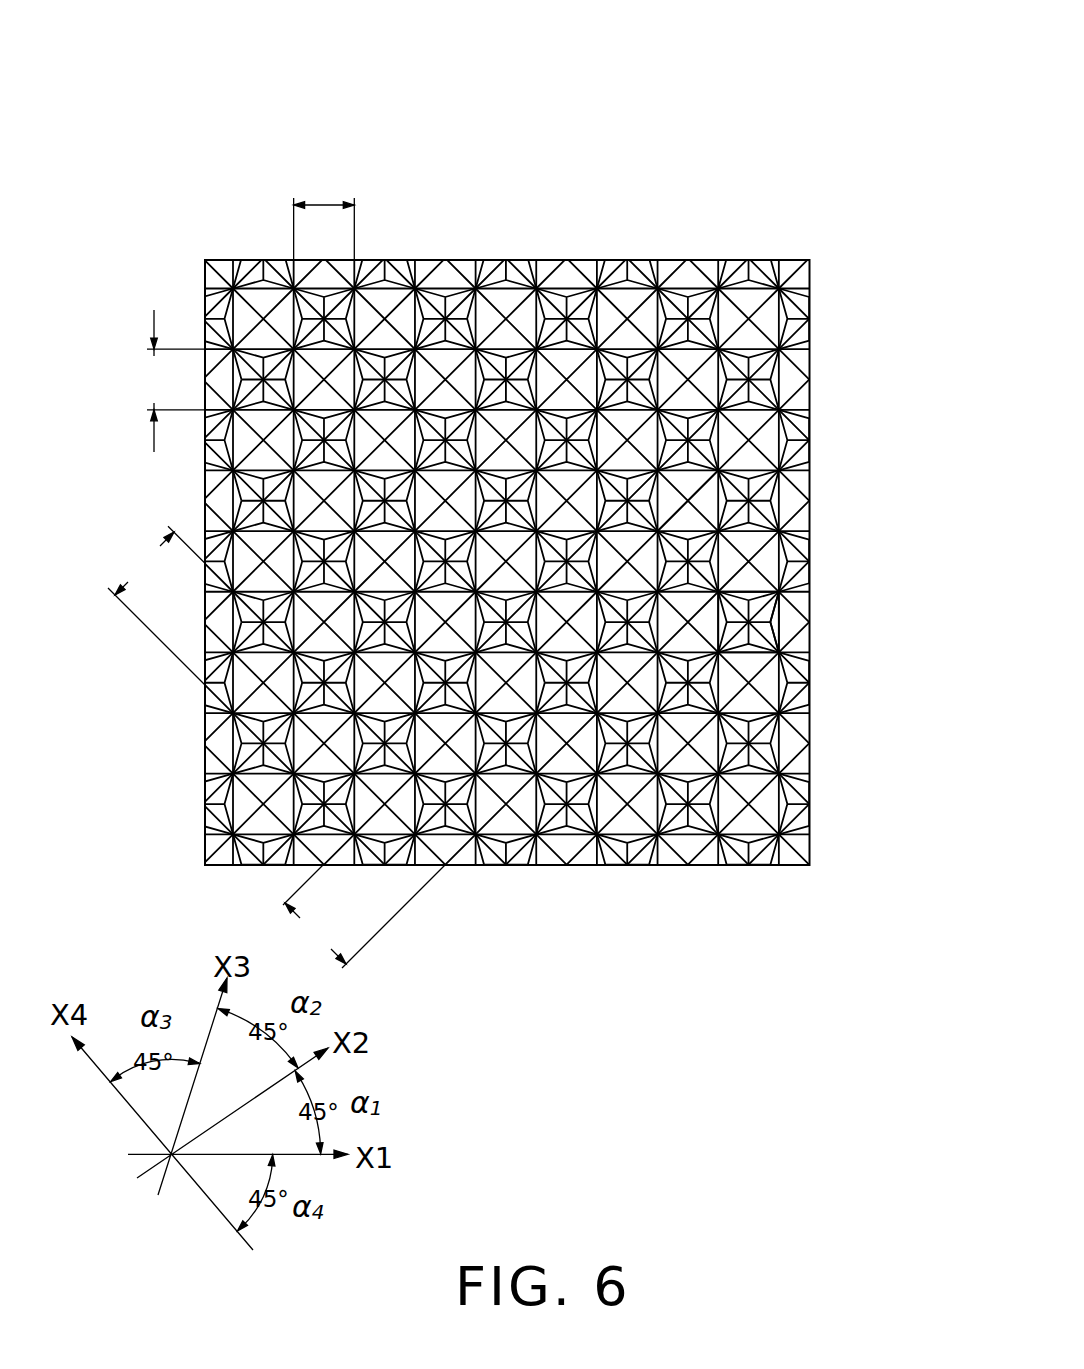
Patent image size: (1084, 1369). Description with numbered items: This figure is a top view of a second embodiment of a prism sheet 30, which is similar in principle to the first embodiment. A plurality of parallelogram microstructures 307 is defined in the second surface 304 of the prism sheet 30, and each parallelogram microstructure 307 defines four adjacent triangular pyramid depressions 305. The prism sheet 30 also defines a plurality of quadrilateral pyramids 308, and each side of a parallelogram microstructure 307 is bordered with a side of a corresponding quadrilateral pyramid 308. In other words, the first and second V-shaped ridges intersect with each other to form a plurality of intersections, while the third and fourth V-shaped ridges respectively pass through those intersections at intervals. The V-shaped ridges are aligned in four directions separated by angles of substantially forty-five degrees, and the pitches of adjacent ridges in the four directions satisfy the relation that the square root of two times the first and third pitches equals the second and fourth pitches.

The prism sheet 30 is at (292, 87).
The second surface 304 is at (812, 743).
The triangular pyramid depression 305 is at (775, 624).
The parallelogram microstructure 307 is at (755, 620).
The quadrilateral pyramid 308 is at (695, 493).